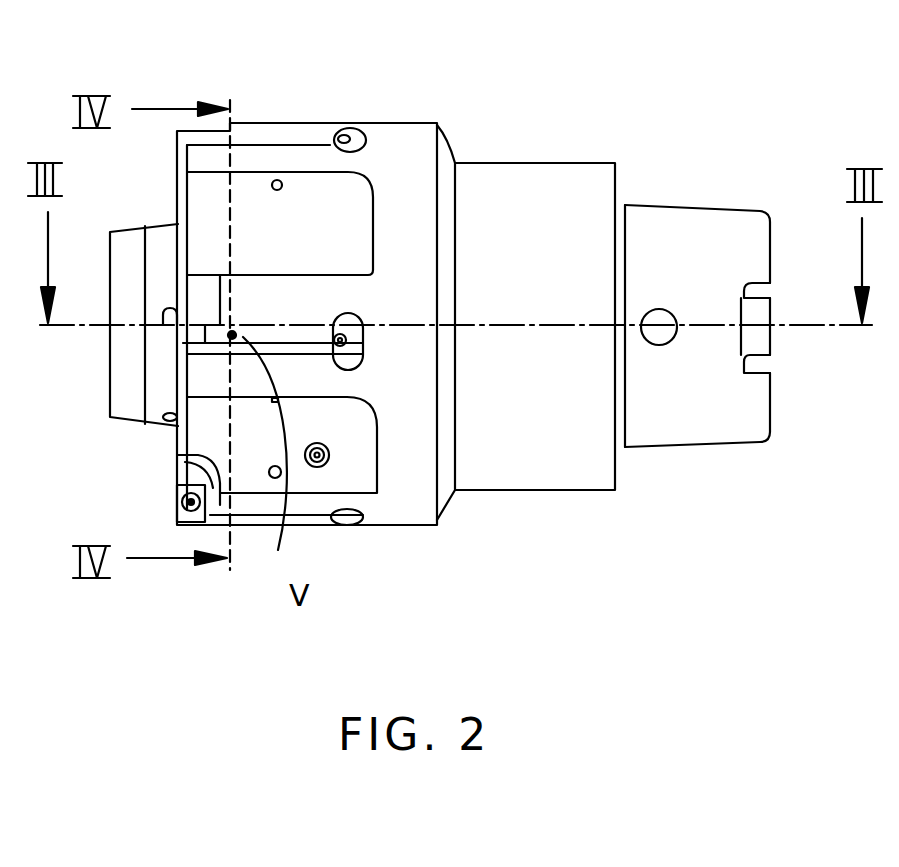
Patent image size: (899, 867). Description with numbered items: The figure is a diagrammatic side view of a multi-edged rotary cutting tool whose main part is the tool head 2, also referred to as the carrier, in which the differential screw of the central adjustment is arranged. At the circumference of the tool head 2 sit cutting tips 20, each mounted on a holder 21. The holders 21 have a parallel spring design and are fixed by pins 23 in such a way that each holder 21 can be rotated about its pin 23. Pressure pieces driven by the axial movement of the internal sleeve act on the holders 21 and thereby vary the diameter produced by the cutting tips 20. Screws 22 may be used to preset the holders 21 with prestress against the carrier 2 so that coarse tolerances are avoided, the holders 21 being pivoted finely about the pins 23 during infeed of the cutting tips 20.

The tool head 2 is at (410, 508).
The cutting tip 20 is at (177, 500).
The holder 21 is at (310, 138).
The screw 22 is at (358, 343).
The pin 23 is at (275, 478).